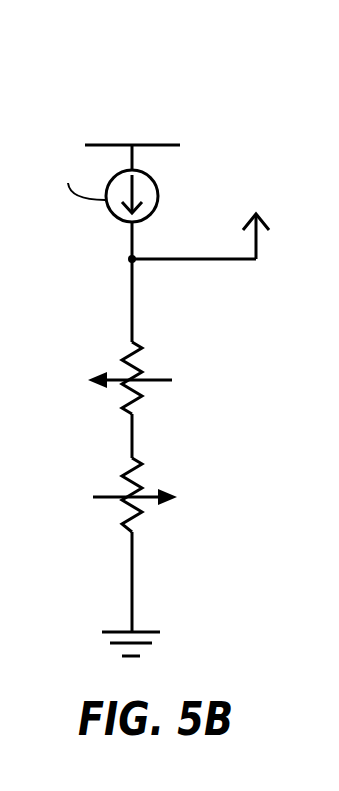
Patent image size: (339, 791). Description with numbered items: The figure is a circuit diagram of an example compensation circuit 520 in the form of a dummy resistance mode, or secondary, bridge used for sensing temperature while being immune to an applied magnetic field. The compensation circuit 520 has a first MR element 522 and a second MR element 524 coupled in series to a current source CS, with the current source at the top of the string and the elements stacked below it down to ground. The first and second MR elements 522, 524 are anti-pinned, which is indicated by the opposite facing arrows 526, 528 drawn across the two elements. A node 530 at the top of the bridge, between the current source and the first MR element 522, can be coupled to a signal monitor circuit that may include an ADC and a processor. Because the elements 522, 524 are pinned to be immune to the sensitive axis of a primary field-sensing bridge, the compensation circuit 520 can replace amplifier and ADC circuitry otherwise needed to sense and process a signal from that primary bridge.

The compensation circuit 520 is at (171, 113).
The first MR element 522 is at (135, 359).
The second MR element 524 is at (133, 475).
The arrow 526 is at (155, 385).
The arrow 528 is at (145, 505).
The node 530 is at (196, 260).